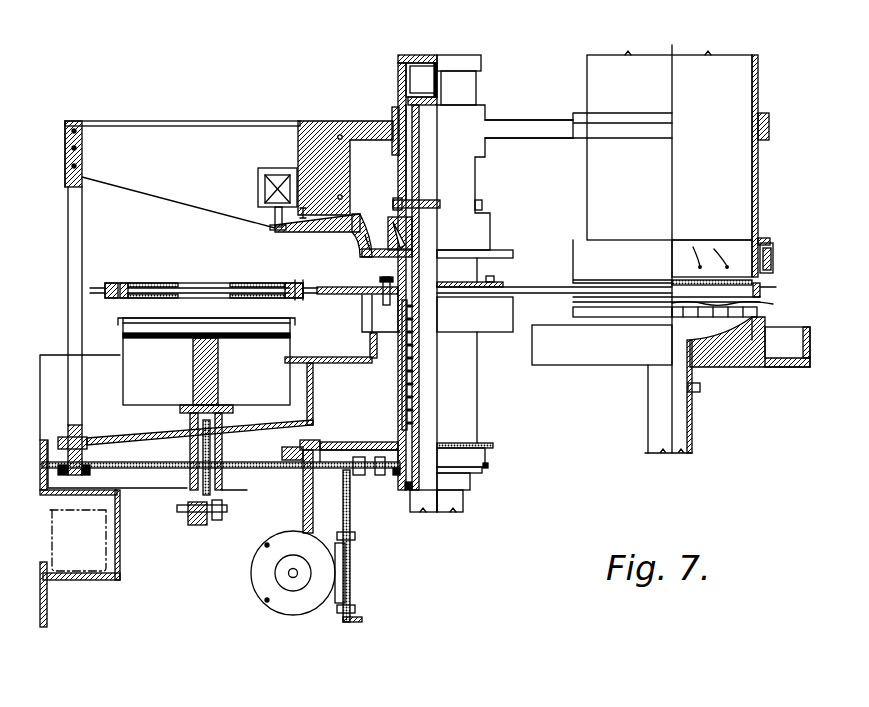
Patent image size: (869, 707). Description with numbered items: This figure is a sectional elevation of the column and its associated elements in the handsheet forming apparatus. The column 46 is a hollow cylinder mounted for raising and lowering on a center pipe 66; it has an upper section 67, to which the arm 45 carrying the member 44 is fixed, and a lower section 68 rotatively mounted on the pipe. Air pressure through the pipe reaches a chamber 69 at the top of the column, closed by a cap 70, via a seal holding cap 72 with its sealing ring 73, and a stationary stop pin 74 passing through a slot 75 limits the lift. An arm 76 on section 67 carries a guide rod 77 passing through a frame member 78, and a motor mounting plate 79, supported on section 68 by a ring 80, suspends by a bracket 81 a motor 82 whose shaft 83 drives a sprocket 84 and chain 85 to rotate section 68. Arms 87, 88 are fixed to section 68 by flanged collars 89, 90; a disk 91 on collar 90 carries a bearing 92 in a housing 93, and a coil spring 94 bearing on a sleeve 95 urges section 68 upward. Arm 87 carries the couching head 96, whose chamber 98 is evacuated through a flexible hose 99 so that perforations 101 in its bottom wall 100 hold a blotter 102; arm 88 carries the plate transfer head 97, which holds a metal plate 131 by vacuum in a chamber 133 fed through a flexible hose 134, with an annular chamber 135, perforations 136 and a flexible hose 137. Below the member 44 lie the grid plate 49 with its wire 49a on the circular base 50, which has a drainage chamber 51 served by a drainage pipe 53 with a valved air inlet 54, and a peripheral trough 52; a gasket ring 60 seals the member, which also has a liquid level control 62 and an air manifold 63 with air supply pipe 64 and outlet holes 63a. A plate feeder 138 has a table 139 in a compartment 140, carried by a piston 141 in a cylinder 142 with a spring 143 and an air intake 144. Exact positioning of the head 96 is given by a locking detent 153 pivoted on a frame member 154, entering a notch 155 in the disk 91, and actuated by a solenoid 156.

The member 44 is at (590, 94).
The arm 45 is at (537, 135).
The column 46 is at (481, 84).
The grid plate 49 is at (764, 313).
The wire 49a is at (776, 304).
The circular base 50 is at (598, 355).
The drainage chamber 51 is at (718, 326).
The annular peripheral trough 52 is at (793, 345).
The drainage pipe 53 is at (693, 441).
The valved air inlet 54 is at (700, 390).
The resilient gasket ring 60 is at (775, 272).
The liquid level control 62 is at (763, 126).
The annular air manifold 63 is at (775, 252).
The air outlet holes 63a is at (712, 257).
The air supply pipe 64 is at (770, 242).
The center pipe 66 is at (417, 181).
The upper section 67 is at (384, 74).
The lower section 68 is at (500, 409).
The chamber 69 is at (425, 72).
The cap 70 is at (415, 56).
The seal holding cap 72 is at (432, 101).
The sealing ring 73 is at (394, 114).
The stationary stop pin 74 is at (428, 208).
The slot 75 is at (398, 181).
The arm 76 is at (194, 131).
The guide rod 77 is at (75, 215).
The frame member 78 is at (103, 440).
The motor mounting plate 79 is at (128, 468).
The ring 80 is at (487, 467).
The bracket 81 is at (300, 474).
The motor 82 is at (263, 551).
The shaft 83 is at (303, 505).
The sprocket 84 is at (318, 442).
The chain 85 is at (350, 444).
The arm 87 is at (520, 291).
The arm 88 is at (357, 282).
The flanged collar 89 is at (381, 326).
The flanged collar 90 is at (383, 285).
The disk 91 is at (508, 252).
The bearing 92 is at (389, 236).
The housing 93 is at (392, 222).
The coil spring 94 is at (402, 381).
The sleeve 95 is at (412, 420).
The couching head 96 is at (610, 282).
The plate transfer head 97 is at (146, 276).
The chamber 98 is at (678, 290).
The flexible hose 99 is at (777, 287).
The bottom wall 100 is at (580, 305).
The perforations 101 is at (672, 308).
The blotter 102 is at (590, 298).
The metal plate 131 is at (238, 312).
The chamber 133 is at (173, 285).
The flexible hose 134 is at (218, 277).
The annular chamber 135 is at (291, 283).
The perforations 136 is at (300, 299).
The flexible hose 137 is at (103, 283).
The plate feeder 138 is at (103, 345).
The table 139 is at (140, 338).
The compartment 140 is at (276, 347).
The piston 141 is at (219, 368).
The cylinder 142 is at (219, 457).
The spring 143 is at (190, 448).
The air intake 144 is at (195, 525).
The locking detent 153 is at (333, 232).
The frame member 154 is at (305, 148).
The notch 155 is at (355, 254).
The solenoid 156 is at (257, 180).